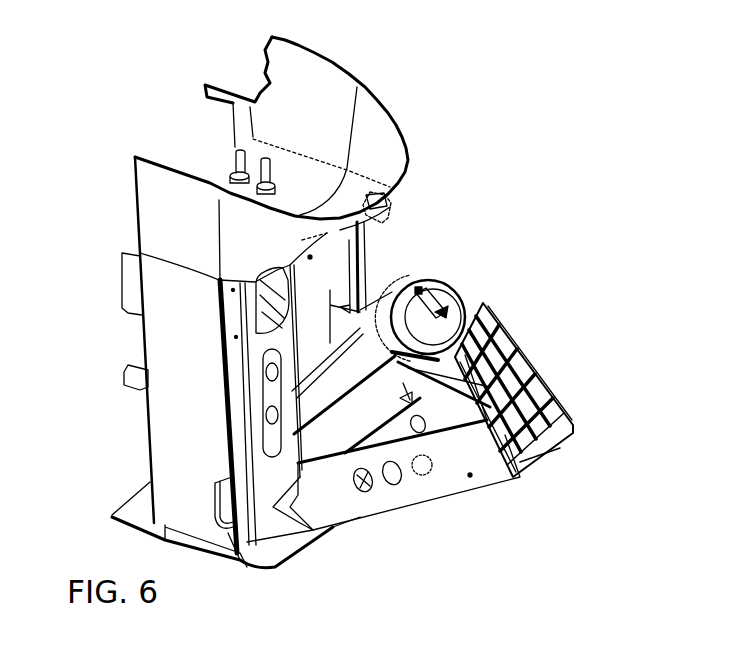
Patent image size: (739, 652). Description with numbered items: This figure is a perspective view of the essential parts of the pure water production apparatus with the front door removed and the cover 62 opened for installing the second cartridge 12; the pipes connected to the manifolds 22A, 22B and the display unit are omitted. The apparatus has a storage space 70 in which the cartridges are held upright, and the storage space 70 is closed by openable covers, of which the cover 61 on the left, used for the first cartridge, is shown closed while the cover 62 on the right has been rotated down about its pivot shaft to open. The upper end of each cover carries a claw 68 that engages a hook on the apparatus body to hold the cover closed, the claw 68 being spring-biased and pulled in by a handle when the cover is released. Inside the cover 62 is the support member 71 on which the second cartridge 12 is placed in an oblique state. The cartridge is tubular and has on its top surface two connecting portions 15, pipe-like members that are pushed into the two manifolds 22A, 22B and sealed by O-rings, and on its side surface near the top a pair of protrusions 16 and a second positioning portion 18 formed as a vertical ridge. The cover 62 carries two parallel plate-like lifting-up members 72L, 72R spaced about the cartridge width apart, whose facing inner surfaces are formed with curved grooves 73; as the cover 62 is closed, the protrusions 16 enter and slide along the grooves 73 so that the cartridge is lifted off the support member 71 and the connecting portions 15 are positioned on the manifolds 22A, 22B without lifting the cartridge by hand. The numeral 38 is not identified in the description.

The second cartridge 12 is at (452, 283).
The connecting portion 15 is at (446, 312).
The protrusion 16 is at (388, 360).
The second positioning portion 18 is at (419, 288).
The manifold 22A is at (231, 174).
The manifold 22B is at (273, 167).
The knob 38 is at (388, 210).
The cover 61 is at (263, 497).
The cover 62 is at (478, 480).
The claw 68 is at (557, 437).
The storage space 70 is at (313, 280).
The support member 71 is at (330, 440).
The lifting-up member 72L is at (443, 417).
The lifting-up member 72R is at (537, 363).
The groove 73 is at (500, 327).